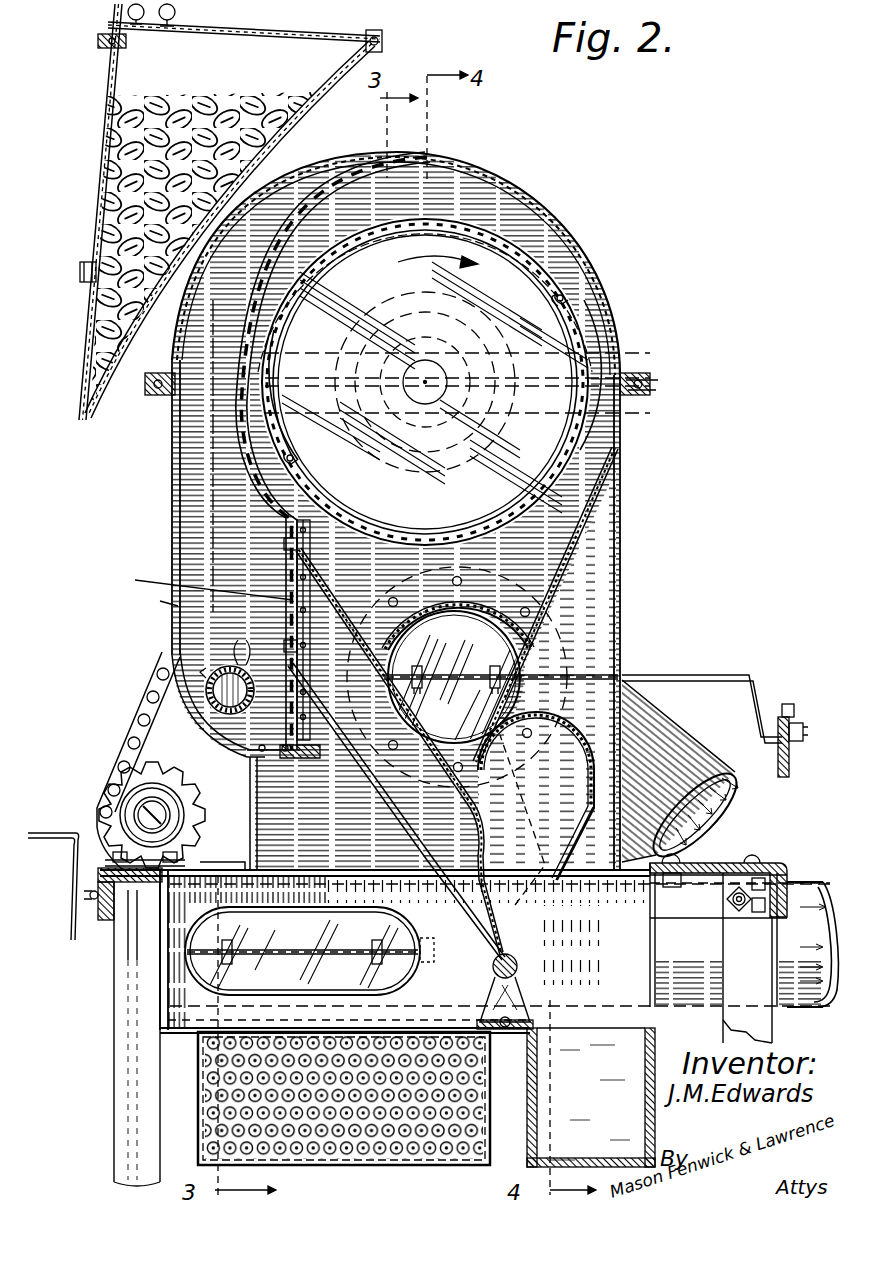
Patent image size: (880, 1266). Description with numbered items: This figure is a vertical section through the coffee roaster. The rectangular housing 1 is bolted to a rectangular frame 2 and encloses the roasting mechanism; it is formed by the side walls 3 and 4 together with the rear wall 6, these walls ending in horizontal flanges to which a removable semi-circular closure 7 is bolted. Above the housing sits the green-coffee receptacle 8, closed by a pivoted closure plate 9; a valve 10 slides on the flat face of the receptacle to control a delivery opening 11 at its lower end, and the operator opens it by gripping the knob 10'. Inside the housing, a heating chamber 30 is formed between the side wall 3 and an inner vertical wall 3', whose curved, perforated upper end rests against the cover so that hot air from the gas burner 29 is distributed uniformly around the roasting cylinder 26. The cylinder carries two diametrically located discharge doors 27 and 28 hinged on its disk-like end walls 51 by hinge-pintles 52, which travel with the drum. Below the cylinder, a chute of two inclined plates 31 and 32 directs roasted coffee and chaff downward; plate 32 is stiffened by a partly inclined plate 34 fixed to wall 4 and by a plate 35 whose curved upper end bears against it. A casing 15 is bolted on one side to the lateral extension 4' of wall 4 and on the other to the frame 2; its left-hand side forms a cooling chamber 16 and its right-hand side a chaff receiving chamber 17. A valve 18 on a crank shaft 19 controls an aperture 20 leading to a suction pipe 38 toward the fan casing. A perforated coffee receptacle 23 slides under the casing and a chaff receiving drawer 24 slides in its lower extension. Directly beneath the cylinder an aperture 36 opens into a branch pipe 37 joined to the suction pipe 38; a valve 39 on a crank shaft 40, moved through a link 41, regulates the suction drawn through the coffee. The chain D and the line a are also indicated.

The housing 1 is at (178, 545).
The rectangular frame 2 is at (112, 886).
The side wall 3 is at (158, 599).
The inner vertical wall 3' is at (202, 583).
The side wall 4 is at (636, 621).
The lateral extension 4' is at (718, 875).
The rear wall 6 is at (270, 846).
The semi-circular closure 7 is at (582, 270).
The receptacle 8 is at (312, 68).
The closure plate 9 is at (212, 32).
The valve 10 is at (92, 212).
The knob 10' is at (136, 34).
The delivery opening 11 is at (82, 406).
The casing 15 is at (162, 1028).
The cooling chamber 16 is at (349, 1003).
The chaff receiving chamber 17 is at (590, 960).
The valve 18 is at (396, 918).
The crank shaft 19 is at (72, 836).
The aperture 20 is at (320, 914).
The perforated coffee receptacle 23 is at (330, 1166).
The chaff receiving drawer 24 is at (591, 1097).
The roasting cylinder 26 is at (478, 224).
The discharge door 27 is at (278, 348).
The discharge door 28 is at (582, 345).
The gas burner 29 is at (206, 690).
The heating chamber 30 is at (195, 493).
The inclined plate 31 is at (318, 578).
The inclined plate 32 is at (612, 556).
The partly inclined plate 34 is at (580, 758).
The plate 35 is at (565, 858).
The aperture 36 is at (450, 602).
The branch pipe 37 is at (716, 738).
The suction pipe 38 is at (812, 860).
The valve 39 is at (501, 677).
The crank shaft 40 is at (692, 674).
The link 41 is at (790, 776).
The disk-like end wall 51 is at (438, 252).
The hinge-pintle 52 is at (566, 296).
The drive chain D is at (138, 761).
The pivot line a is at (522, 823).